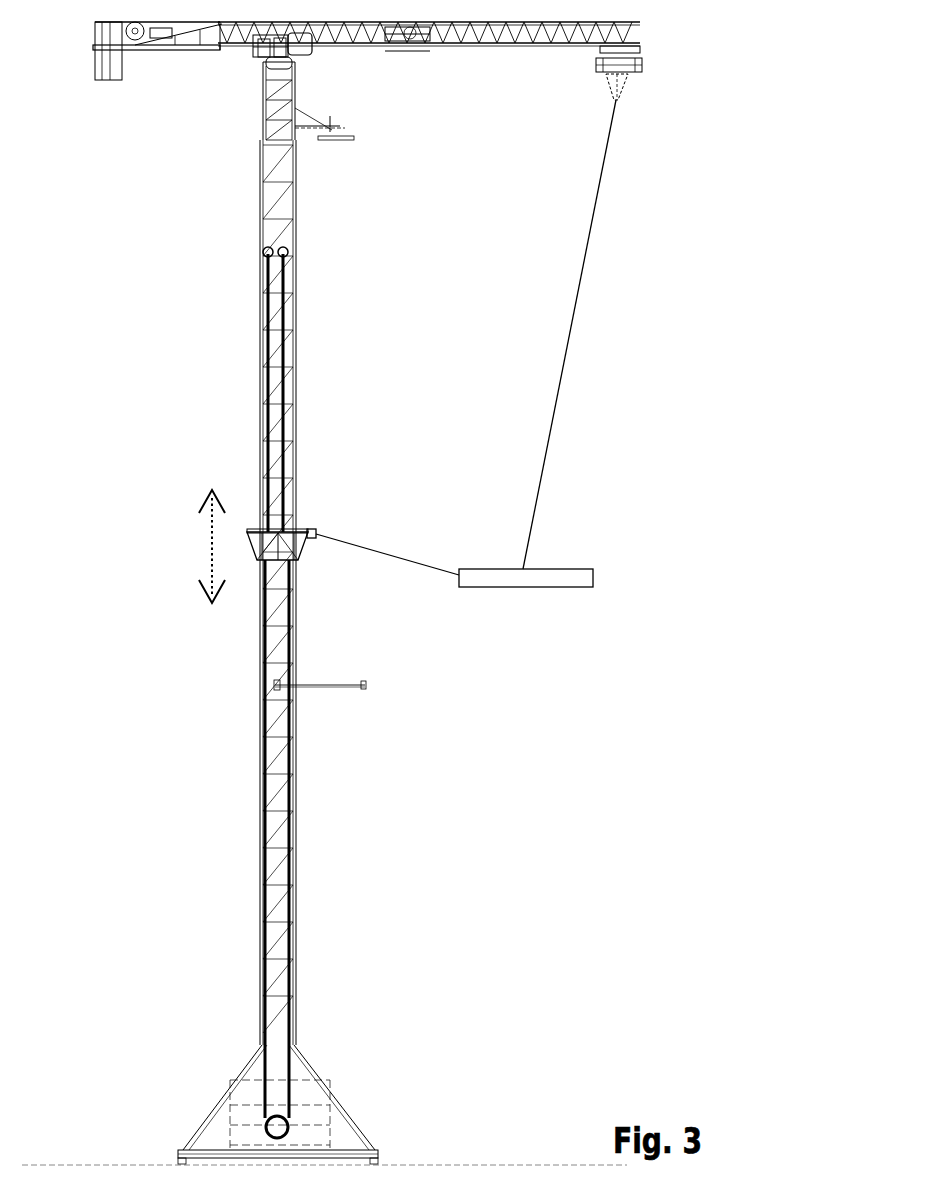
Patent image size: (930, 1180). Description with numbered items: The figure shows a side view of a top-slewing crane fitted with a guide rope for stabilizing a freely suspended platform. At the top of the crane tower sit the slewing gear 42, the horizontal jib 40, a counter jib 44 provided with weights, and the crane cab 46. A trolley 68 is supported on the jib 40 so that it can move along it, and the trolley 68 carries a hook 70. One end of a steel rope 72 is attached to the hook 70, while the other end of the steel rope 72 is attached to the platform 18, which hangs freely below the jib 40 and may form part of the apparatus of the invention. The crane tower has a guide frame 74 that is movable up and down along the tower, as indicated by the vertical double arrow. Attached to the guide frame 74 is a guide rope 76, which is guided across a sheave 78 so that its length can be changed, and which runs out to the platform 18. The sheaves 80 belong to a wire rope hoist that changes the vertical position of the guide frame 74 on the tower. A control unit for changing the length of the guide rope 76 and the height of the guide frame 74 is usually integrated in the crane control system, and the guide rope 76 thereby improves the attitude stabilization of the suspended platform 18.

The platform 18 is at (517, 578).
The jib 40 is at (460, 30).
The slewing gear 42 is at (246, 66).
The counter jib 44 is at (136, 47).
The crane cab 46 is at (302, 48).
The trolley 68 is at (632, 55).
The hook 70 is at (620, 100).
The steel rope 72 is at (604, 157).
The guide frame 74 is at (302, 548).
The guide rope 76 is at (405, 563).
The sheave 78 is at (314, 529).
The sheaves of a wire rope hoist 80 is at (290, 252).